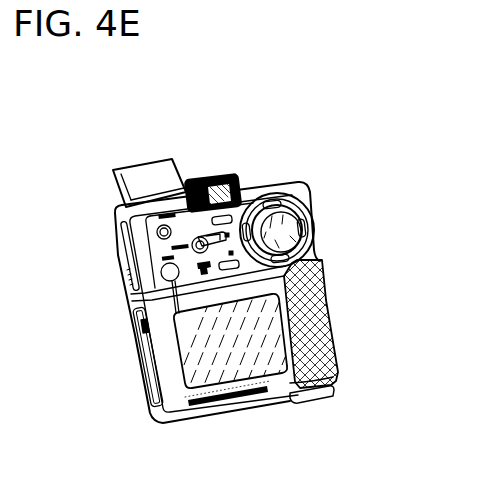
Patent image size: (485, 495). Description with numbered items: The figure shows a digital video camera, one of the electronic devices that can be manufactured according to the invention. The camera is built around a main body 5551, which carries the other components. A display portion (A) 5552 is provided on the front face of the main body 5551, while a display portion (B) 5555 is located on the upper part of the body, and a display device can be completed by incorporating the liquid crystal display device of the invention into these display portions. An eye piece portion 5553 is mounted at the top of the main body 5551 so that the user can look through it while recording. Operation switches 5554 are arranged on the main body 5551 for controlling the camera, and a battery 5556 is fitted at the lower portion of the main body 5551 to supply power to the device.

The main body 5551 is at (241, 327).
The display portion (A) 5552 is at (200, 390).
The eye piece portion 5553 is at (252, 178).
The operation switches 5554 is at (215, 243).
The display portion (B) 5555 is at (312, 260).
The battery 5556 is at (308, 403).